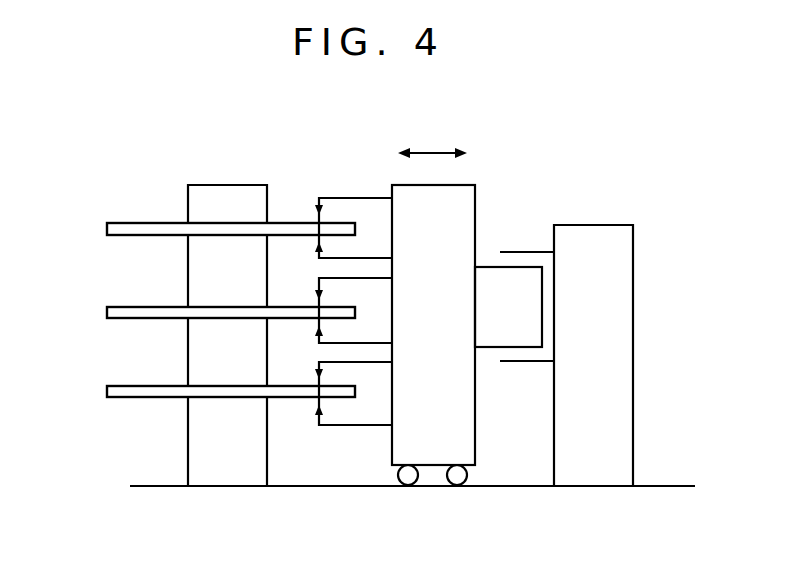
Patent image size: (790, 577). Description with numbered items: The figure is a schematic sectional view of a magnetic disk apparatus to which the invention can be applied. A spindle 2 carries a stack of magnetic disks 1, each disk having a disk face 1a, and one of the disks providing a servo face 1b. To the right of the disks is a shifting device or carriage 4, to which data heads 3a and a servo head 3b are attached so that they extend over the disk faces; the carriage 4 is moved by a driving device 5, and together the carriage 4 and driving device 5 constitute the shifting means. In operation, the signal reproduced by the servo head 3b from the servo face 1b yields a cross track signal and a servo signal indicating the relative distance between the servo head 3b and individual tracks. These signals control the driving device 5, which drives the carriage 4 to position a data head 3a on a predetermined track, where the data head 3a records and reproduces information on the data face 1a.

The magnetic disks 1 is at (107, 229).
The disk face 1a is at (140, 223).
The servo face 1b is at (135, 307).
The spindle 2 is at (235, 185).
The data heads 3a is at (347, 198).
The servo heads 3b is at (319, 286).
The shifting device (carriage) 4 is at (460, 185).
The driving device 5 is at (605, 225).